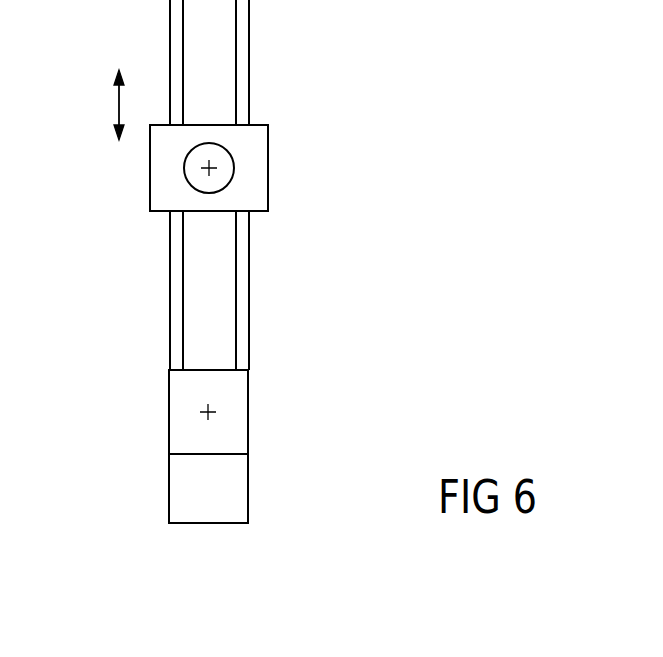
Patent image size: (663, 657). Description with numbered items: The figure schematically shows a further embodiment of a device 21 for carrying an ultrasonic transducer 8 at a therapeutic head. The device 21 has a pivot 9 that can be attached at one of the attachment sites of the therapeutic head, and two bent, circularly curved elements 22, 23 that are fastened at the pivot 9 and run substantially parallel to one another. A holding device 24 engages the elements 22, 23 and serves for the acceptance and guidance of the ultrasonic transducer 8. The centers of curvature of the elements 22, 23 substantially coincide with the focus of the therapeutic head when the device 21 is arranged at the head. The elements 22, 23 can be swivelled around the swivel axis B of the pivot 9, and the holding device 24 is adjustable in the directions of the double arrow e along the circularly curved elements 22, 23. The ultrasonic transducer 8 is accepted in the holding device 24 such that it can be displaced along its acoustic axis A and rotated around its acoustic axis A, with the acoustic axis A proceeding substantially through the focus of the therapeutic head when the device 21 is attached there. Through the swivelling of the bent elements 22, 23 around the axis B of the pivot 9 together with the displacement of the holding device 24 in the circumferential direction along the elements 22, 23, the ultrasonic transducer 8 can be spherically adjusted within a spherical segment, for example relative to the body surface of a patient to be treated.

The device 21 is at (350, 98).
The bent, circularly curved element 22 is at (170, 300).
The bent, circularly curved element 23 is at (237, 292).
The holding device 24 is at (268, 172).
The ultrasonic transducer 8 is at (229, 155).
The pivot 9 is at (248, 430).
The acoustic axis A is at (207, 168).
The swivel axis B is at (205, 413).
The double arrow e is at (119, 112).